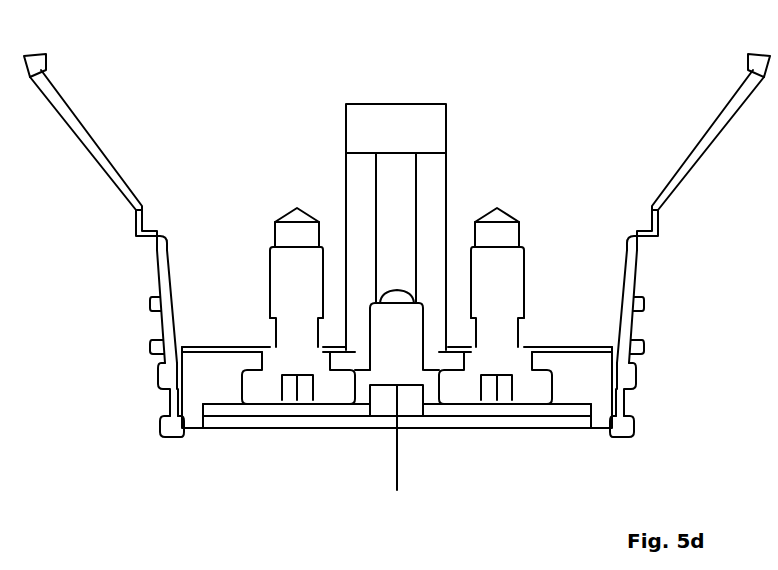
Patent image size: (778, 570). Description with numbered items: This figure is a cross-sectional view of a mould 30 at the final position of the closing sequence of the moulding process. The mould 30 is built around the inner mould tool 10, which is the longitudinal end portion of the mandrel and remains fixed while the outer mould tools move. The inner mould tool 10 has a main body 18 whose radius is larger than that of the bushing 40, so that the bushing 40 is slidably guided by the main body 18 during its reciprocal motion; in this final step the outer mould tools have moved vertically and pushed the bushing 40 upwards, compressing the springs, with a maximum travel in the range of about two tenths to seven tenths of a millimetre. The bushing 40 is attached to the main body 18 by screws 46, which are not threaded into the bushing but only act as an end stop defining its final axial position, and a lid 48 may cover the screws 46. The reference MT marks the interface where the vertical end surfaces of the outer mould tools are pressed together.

The inner mould tool 10 is at (602, 284).
The main body 18 is at (610, 334).
The mould 30 is at (255, 461).
The bushing 40 is at (592, 383).
The screw 46 is at (292, 290).
The lid 48 is at (362, 403).
The interface MT is at (397, 473).